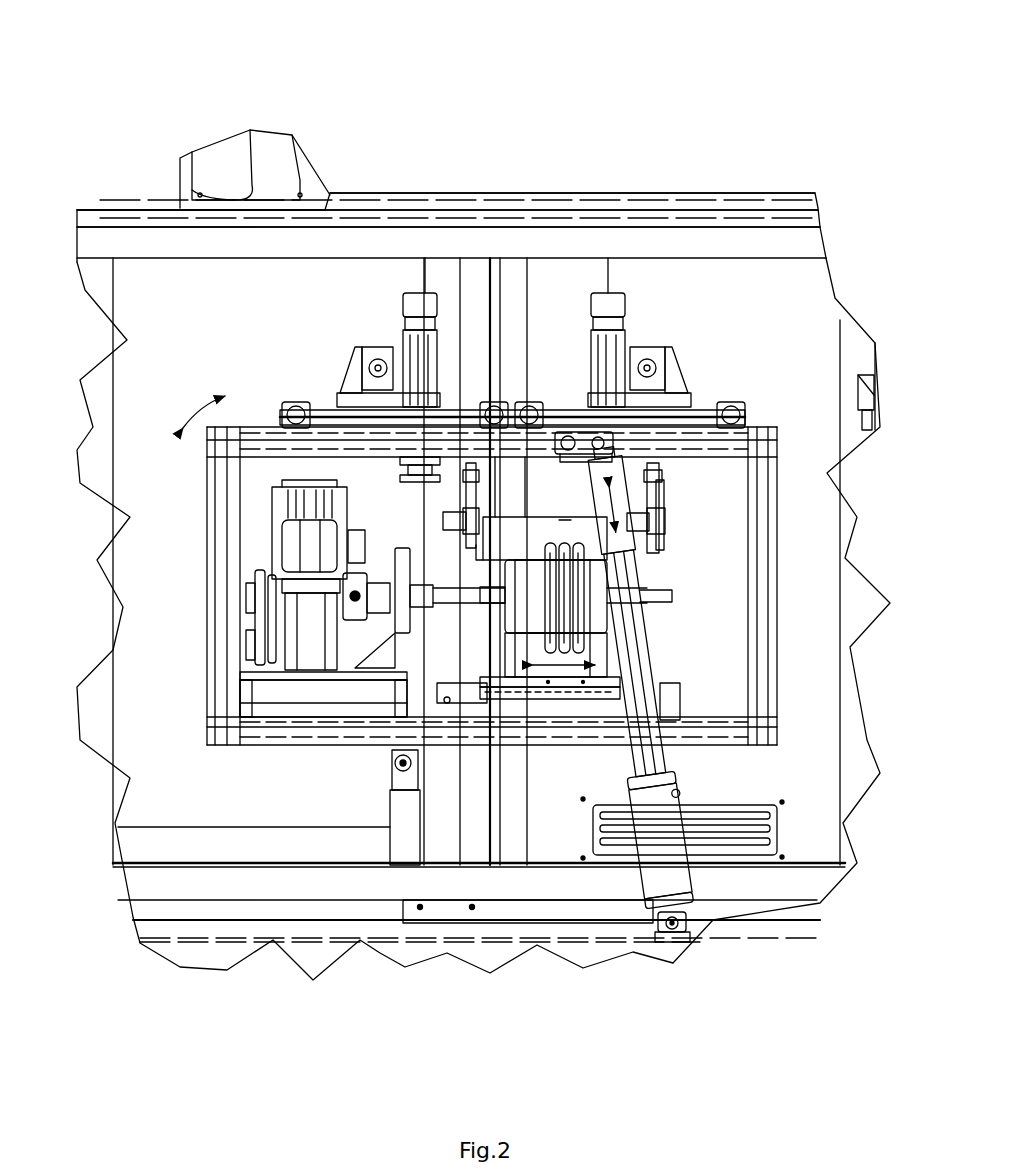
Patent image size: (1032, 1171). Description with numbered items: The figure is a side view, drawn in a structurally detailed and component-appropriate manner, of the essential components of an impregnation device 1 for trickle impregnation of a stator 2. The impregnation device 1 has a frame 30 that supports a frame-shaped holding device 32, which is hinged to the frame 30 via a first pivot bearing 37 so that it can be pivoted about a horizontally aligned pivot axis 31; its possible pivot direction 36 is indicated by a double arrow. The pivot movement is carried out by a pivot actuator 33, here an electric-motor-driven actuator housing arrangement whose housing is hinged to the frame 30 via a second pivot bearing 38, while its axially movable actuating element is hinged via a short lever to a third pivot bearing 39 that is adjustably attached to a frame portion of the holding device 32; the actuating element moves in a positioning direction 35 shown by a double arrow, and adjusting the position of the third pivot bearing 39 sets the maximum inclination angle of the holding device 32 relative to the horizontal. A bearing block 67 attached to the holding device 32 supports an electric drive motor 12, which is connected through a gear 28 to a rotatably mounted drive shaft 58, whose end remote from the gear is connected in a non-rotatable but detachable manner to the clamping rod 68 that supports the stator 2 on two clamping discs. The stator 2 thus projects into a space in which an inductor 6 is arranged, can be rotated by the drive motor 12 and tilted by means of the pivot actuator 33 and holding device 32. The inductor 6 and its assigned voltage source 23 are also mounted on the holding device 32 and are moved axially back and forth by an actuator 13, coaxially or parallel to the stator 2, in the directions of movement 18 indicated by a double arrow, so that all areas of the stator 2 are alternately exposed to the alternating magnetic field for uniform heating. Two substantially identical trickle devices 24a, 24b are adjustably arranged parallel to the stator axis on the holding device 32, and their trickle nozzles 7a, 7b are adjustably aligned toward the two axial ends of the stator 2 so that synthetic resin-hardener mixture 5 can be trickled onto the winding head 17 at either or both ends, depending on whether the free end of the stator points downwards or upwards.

The impregnation device 1 is at (703, 113).
The frame 30 is at (523, 190).
The holding device 32 is at (255, 745).
The pivot actuator 33 is at (680, 755).
The pivot axis 31 is at (395, 762).
The first pivot bearing 37 is at (403, 763).
The trickle device 24a is at (338, 340).
The trickle device 24b is at (683, 338).
The pivot direction 36 is at (183, 425).
The third pivot bearing 39 is at (567, 430).
The electric drive motor 12 is at (275, 520).
The gear 28 is at (255, 622).
The drive shaft 58 is at (388, 625).
The clamping rod 68 is at (450, 620).
The bearing block 67 is at (262, 688).
The trickle nozzle 7a is at (462, 545).
The trickle nozzle 7b is at (662, 545).
The positioning direction 35 is at (635, 520).
The stator 2 is at (543, 545).
The winding head 17 is at (508, 565).
The inductor 6 is at (565, 543).
The synthetic resin-hardener mixture 5 is at (640, 560).
The second pivot bearing 38 is at (690, 912).
The actuator 13 is at (662, 675).
The voltage source 23 is at (544, 656).
The directions of movement 18 is at (566, 665).